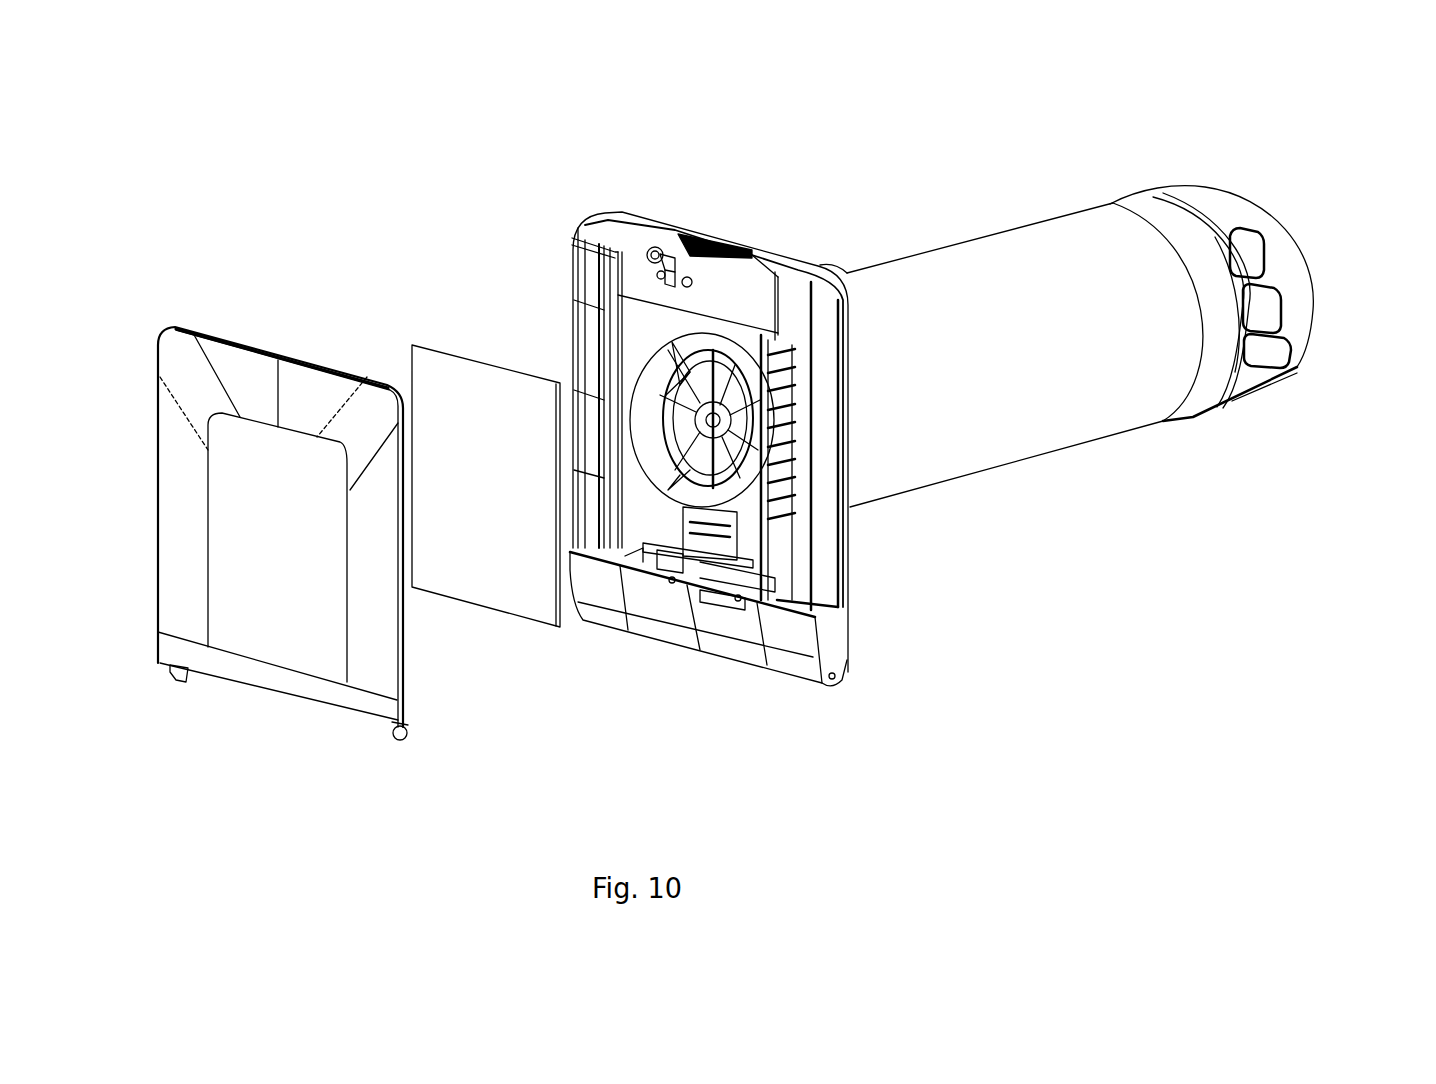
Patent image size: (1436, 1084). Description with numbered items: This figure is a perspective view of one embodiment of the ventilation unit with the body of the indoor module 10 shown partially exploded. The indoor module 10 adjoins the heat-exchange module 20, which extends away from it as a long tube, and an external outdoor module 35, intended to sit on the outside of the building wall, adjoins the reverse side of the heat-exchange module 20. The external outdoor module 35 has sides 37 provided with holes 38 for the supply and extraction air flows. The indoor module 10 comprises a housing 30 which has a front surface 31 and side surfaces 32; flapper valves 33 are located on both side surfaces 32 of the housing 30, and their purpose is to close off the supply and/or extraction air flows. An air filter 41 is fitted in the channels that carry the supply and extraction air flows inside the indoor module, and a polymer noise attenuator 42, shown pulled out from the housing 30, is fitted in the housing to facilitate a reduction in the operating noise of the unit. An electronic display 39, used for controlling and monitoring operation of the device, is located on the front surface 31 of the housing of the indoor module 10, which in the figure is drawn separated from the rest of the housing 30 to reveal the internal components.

The indoor module 10 is at (688, 206).
The heat-exchange module 20 is at (994, 219).
The housing 30 is at (760, 256).
The front surface 31 is at (183, 497).
The side surface 32 is at (833, 644).
The flapper valve 33 is at (575, 320).
The external outdoor module 35 is at (1268, 189).
The side 37 is at (1295, 327).
The hole 38 is at (1250, 257).
The electronic display 39 is at (277, 682).
The air filter 41 is at (760, 421).
The polymer noise attenuator 42 is at (460, 380).